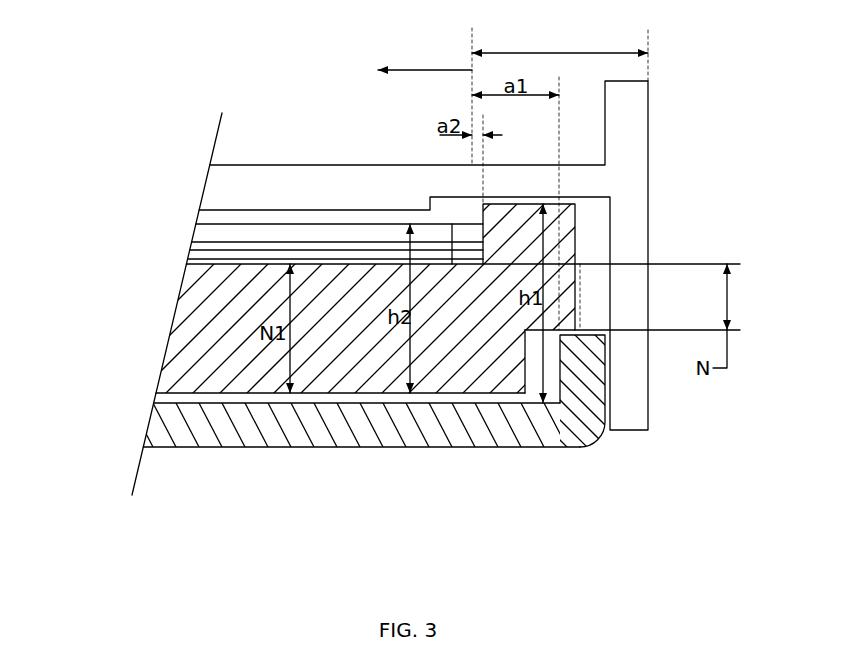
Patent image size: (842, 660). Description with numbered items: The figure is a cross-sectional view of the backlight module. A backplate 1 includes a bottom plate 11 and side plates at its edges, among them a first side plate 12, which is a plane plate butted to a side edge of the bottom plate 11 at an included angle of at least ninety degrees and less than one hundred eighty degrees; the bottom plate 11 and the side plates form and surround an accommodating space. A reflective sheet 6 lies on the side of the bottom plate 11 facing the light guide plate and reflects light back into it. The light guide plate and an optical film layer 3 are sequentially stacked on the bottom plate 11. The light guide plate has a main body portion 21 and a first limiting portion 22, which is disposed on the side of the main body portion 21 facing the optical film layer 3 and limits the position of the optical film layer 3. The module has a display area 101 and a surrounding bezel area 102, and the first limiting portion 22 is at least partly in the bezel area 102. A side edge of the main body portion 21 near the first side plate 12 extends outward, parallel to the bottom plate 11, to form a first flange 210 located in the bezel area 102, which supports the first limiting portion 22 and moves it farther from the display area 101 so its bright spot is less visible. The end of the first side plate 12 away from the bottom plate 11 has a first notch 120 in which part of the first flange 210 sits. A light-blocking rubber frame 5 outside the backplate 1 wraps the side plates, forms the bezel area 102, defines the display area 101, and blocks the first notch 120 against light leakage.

The backplate 1 is at (435, 440).
The optical film layer 3 is at (200, 232).
The rubber frame 5 is at (605, 182).
The reflective sheet 6 is at (158, 402).
The bottom plate 11 is at (457, 432).
The first side plate 12 is at (583, 362).
The main body portion 21 is at (485, 358).
The first limiting portion 22 is at (573, 220).
The display area 101 is at (407, 70).
The bezel area 102 is at (560, 96).
The first notch 120 is at (590, 302).
The first flange 210 is at (580, 280).